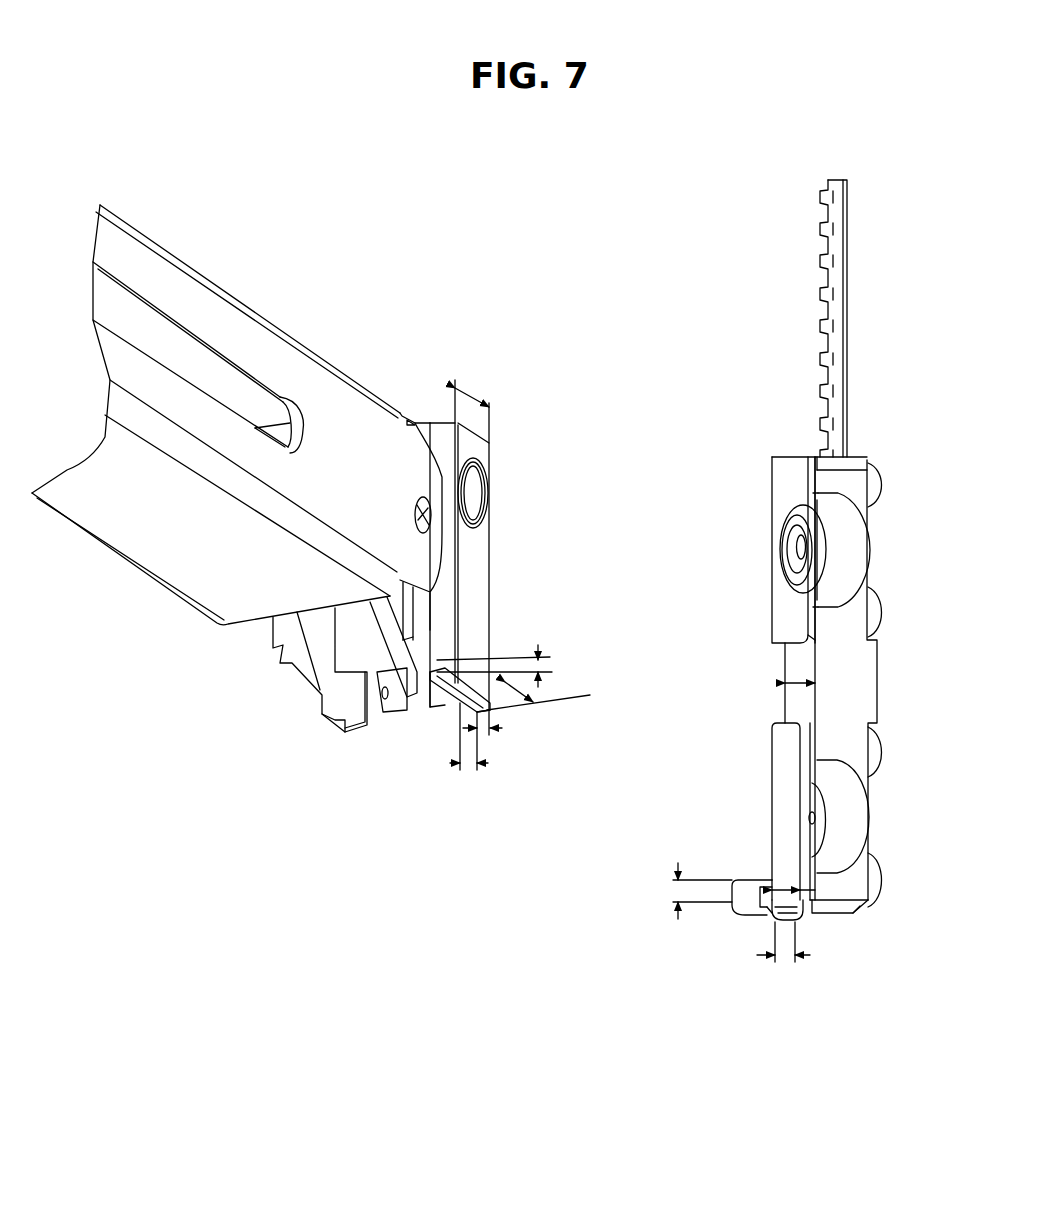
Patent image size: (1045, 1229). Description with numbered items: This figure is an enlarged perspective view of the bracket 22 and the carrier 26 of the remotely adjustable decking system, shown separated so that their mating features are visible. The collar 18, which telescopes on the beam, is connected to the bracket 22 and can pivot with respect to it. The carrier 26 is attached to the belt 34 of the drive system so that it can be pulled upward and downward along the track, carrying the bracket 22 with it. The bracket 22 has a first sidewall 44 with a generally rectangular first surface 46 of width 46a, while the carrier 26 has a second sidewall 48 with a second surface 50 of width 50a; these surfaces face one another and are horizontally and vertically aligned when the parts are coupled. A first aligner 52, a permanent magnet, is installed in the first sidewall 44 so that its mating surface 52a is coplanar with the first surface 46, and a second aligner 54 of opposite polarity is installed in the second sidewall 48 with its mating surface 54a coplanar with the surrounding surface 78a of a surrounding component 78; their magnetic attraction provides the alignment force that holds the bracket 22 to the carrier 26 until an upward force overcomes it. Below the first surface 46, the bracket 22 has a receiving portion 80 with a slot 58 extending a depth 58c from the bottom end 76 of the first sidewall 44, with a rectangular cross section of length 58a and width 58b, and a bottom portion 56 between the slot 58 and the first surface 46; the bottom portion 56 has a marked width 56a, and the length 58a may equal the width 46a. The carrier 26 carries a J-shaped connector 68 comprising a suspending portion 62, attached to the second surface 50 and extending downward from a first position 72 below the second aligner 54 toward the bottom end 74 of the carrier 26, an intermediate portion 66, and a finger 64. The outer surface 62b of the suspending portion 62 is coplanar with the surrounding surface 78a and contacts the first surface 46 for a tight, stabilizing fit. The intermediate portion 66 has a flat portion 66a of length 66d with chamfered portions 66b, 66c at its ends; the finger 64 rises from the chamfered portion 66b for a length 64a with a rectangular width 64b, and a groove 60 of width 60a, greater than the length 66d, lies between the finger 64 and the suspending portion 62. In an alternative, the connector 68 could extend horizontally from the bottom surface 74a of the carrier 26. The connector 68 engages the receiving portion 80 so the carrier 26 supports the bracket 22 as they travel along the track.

The collar 18 is at (302, 368).
The bracket 22 is at (395, 665).
The carrier 26 is at (857, 463).
The belt 34 is at (843, 297).
The first sidewall 44 is at (445, 435).
The first surface 46 is at (478, 450).
The width of the first surface 46a is at (470, 393).
The second sidewall 48 is at (822, 463).
The second surface 50 is at (790, 653).
The width of the second surface 50a is at (790, 680).
The first aligner 52 is at (473, 488).
The mating surface of the first aligner 52a is at (473, 505).
The second aligner 54 is at (800, 525).
The mating surface of the second aligner 54a is at (793, 580).
The bottom portion 56 is at (442, 665).
The tab gap 56a is at (487, 733).
The slot 58 is at (460, 710).
The length of the slot 58a is at (520, 700).
The width of the slot 58b is at (473, 767).
The depth of the slot 58c is at (547, 663).
The groove 60 is at (772, 887).
The width of the groove 60a is at (788, 887).
The suspending portion 62 is at (793, 753).
The outer surface of the suspending portion 62b is at (780, 742).
The finger 64 is at (750, 888).
The length of the finger 64a is at (687, 892).
The width of the finger 64b is at (760, 897).
The intermediate portion 66 is at (800, 920).
The flat portion 66a is at (793, 923).
The chamfered portion 66b is at (767, 917).
The chamfered portion 66c is at (802, 912).
The length of the flat portion 66d is at (782, 957).
The connector 68 is at (803, 887).
The first position 72 is at (810, 707).
The bottom end of the carrier 74 is at (870, 903).
The bottom surface of the carrier 74a is at (853, 907).
The bottom end of the first sidewall 76 is at (487, 710).
The surrounding component 78 is at (780, 472).
The surrounding surface 78a is at (787, 615).
The receiving portion 80 is at (413, 690).